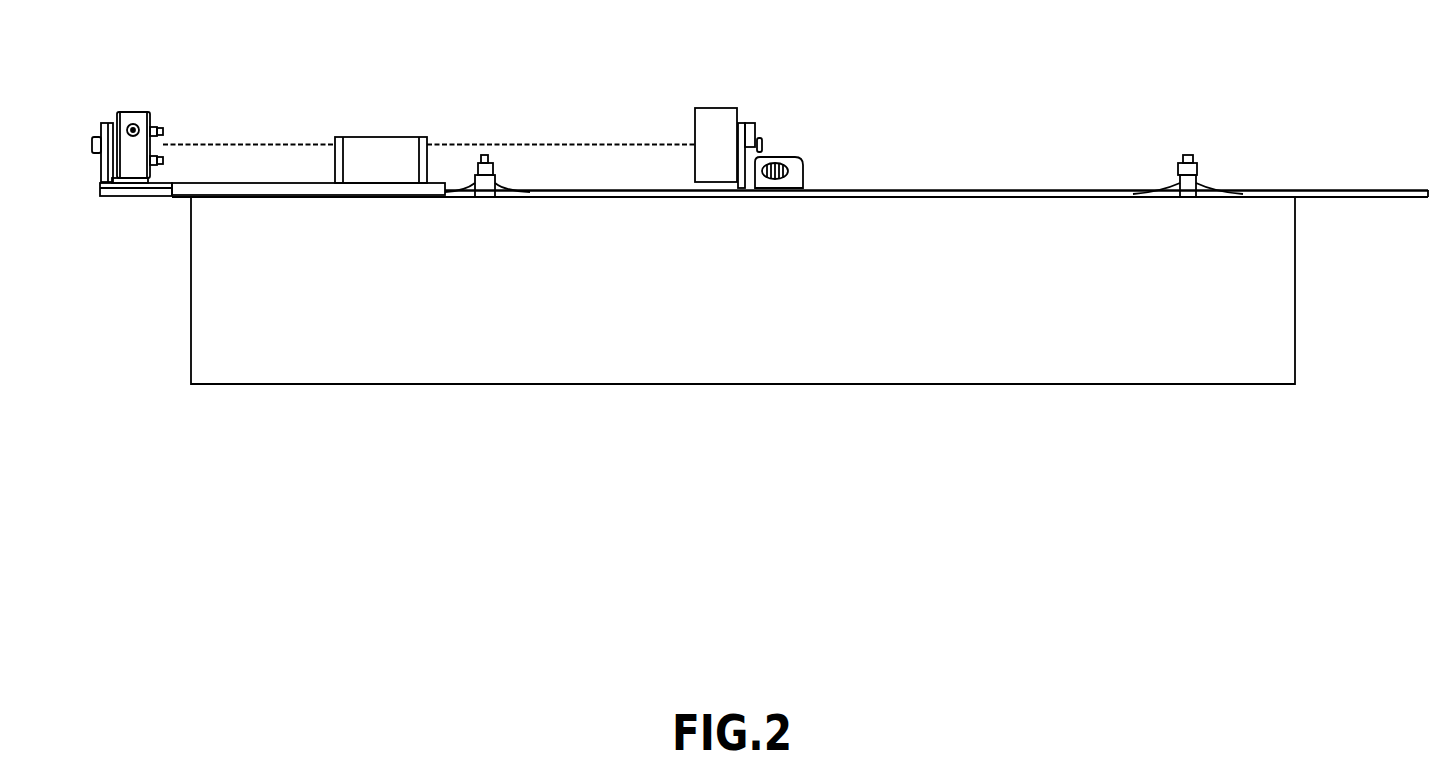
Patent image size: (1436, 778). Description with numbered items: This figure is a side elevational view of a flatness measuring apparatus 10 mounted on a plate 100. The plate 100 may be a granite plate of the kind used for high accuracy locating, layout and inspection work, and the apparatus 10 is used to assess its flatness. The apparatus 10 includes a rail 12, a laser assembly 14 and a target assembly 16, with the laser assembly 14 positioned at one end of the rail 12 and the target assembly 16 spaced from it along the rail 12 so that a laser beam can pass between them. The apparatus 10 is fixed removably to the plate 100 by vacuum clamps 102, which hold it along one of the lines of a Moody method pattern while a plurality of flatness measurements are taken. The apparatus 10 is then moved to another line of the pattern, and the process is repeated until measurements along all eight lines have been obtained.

The apparatus 10 is at (252, 117).
The rail 12 is at (1363, 193).
The laser assembly 14 is at (181, 191).
The target assembly 16 is at (727, 113).
The plate 100 is at (1233, 370).
The vacuum clamps 102 is at (1188, 153).